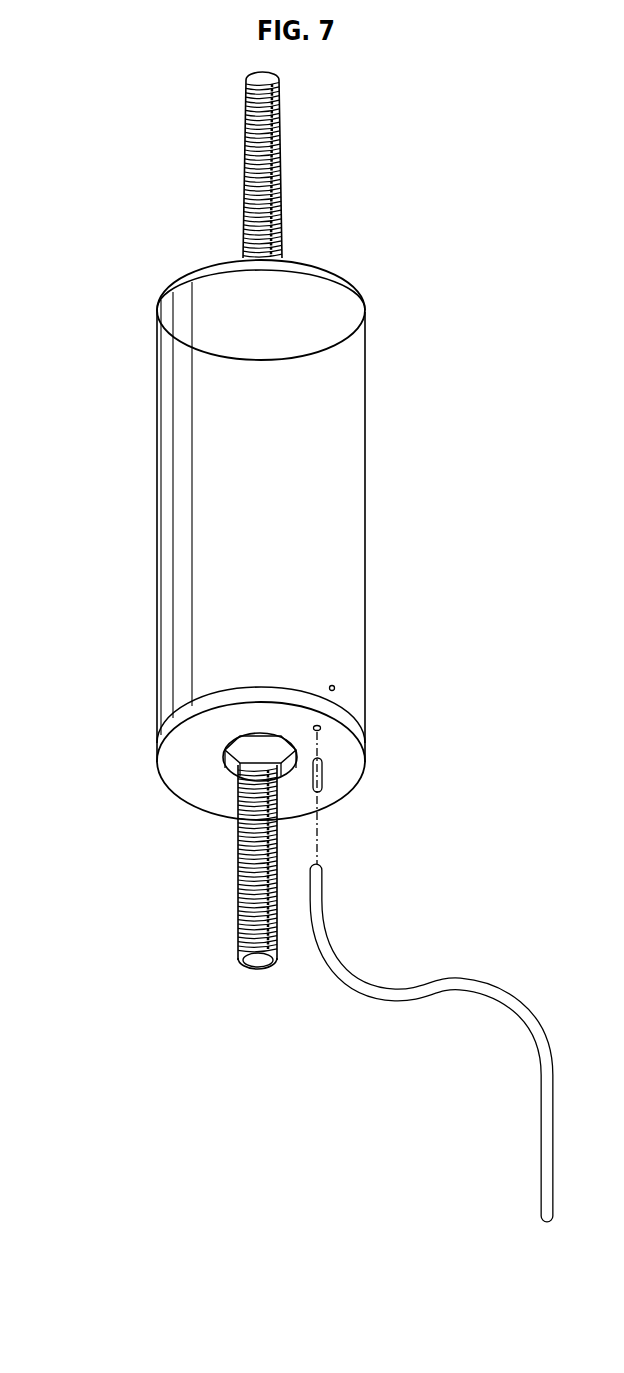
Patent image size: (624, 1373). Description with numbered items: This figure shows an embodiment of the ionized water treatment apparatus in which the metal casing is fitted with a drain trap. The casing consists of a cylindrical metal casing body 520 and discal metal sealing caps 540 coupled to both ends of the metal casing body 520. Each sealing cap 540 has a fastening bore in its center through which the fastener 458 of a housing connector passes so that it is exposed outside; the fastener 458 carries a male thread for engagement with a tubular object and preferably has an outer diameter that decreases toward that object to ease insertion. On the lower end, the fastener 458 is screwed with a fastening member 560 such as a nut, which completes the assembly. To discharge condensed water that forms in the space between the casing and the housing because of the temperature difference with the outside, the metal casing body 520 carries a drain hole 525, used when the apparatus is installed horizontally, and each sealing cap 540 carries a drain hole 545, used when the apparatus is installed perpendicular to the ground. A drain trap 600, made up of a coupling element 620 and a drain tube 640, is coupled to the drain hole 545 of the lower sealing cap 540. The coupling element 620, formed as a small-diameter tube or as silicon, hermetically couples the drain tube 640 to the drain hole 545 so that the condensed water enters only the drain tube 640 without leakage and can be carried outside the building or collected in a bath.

The fastener 458 is at (282, 163).
The sealing cap 540 is at (338, 277).
The metal casing body 520 is at (340, 512).
The drain hole 525 is at (334, 687).
The drain hole 545 is at (320, 731).
The fastening member 560 is at (228, 782).
The coupling element 620 is at (323, 773).
The drain tube 640 is at (322, 903).
The drain trap 600 is at (503, 792).